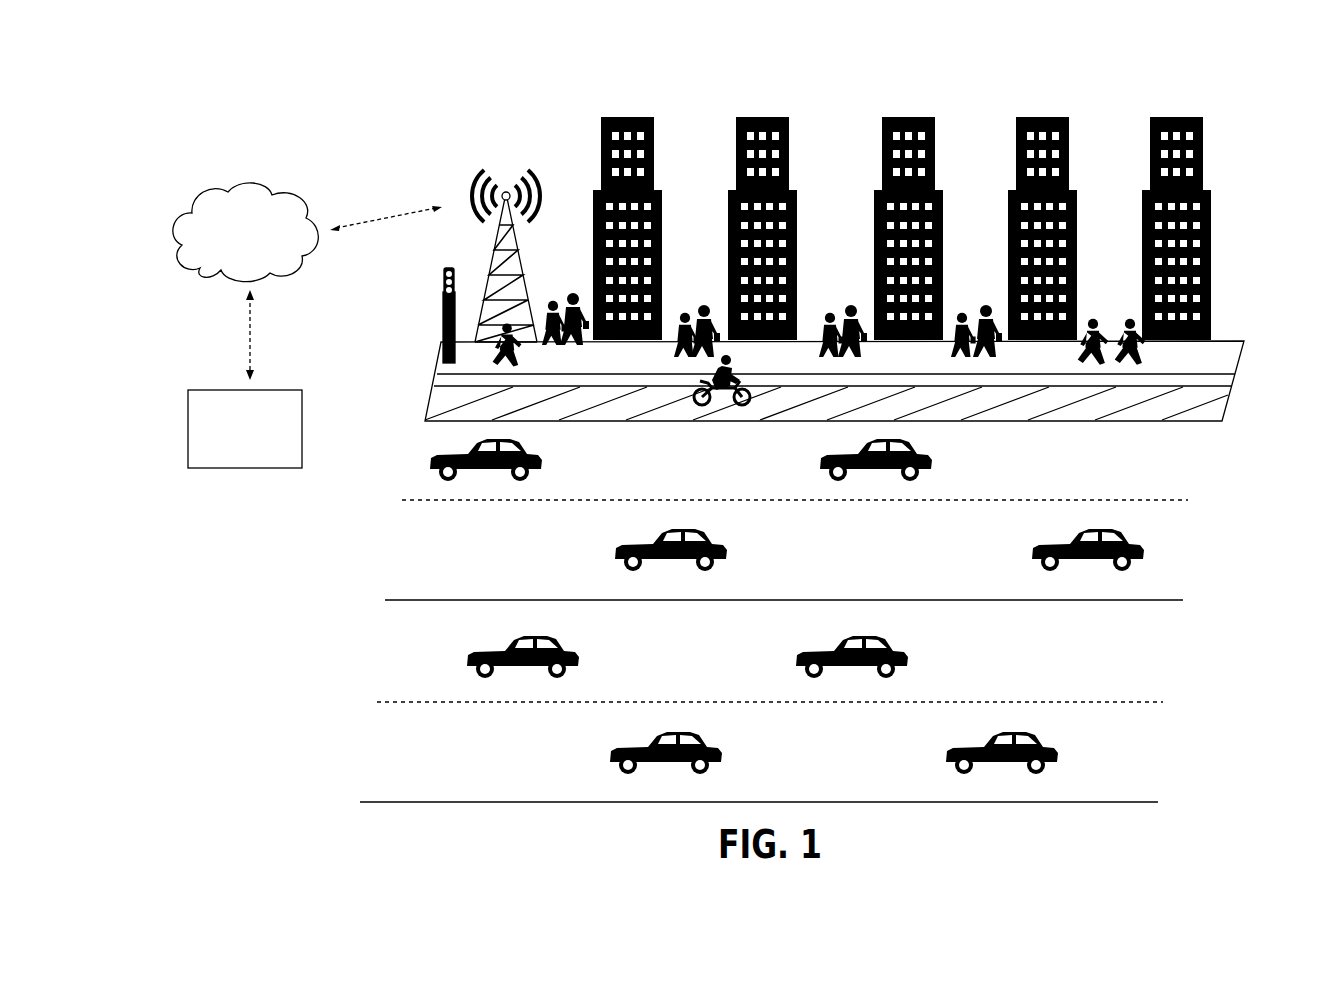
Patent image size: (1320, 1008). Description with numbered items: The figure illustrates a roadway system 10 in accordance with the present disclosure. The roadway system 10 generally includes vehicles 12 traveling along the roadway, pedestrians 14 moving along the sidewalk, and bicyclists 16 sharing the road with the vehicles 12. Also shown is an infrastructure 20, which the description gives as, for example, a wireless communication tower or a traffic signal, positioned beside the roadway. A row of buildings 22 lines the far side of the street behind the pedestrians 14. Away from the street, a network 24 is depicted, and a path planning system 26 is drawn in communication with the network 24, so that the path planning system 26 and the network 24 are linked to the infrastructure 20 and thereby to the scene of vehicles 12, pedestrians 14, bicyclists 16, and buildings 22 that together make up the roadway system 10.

The roadway system 10 is at (318, 136).
The vehicles 12 is at (610, 757).
The pedestrians 14 is at (1115, 315).
The bicyclists 16 is at (700, 403).
The infrastructure 20 is at (476, 238).
The buildings 22 is at (1205, 182).
The network 24 is at (205, 268).
The path planning system 26 is at (253, 468).